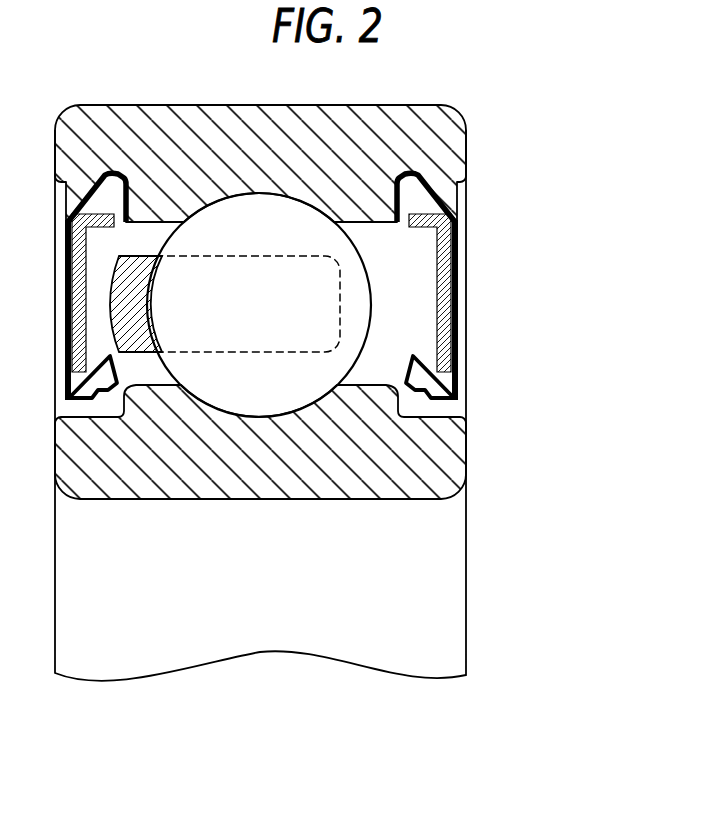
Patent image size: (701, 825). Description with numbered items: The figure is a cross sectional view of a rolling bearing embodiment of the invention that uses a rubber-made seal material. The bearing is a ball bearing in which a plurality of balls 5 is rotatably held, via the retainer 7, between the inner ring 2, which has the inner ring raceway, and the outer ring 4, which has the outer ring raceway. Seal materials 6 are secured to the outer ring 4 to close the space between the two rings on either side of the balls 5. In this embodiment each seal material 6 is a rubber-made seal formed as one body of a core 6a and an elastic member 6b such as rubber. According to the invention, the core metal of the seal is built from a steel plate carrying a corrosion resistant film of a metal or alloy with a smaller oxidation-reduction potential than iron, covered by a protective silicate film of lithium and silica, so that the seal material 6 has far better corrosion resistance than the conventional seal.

The inner ring 2 is at (440, 449).
The outer ring 4 is at (455, 152).
The balls 5 is at (257, 373).
The seal material 6 is at (490, 286).
The core 6a is at (548, 252).
The elastic member 6b is at (453, 263).
The retainer 7 is at (136, 345).